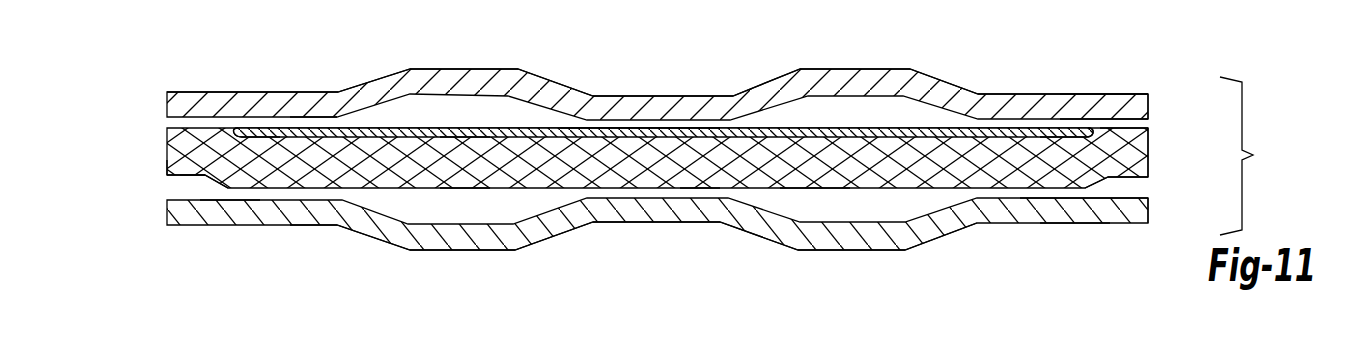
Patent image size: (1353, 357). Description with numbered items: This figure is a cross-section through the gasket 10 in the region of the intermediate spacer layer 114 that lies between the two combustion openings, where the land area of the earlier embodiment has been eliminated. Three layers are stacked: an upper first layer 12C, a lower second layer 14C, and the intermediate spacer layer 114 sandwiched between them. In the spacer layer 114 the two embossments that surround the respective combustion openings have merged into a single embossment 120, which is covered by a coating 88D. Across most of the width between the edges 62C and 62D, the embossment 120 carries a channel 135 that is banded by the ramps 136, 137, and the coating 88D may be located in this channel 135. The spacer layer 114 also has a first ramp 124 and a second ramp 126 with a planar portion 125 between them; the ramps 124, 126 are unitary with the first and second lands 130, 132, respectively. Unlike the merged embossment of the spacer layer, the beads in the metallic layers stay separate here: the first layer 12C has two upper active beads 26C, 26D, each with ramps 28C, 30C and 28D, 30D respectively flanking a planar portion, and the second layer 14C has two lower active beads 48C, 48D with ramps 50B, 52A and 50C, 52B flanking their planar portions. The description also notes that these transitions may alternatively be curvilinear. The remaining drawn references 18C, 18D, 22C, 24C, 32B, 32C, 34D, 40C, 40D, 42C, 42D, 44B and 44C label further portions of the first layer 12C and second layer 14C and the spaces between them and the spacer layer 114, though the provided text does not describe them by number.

The gasket 10 is at (1249, 156).
The first layer 12C is at (190, 97).
The second layer 14C is at (328, 218).
The upper sheet (C) 18C is at (167, 107).
The upper sheet (D) 18D is at (1148, 107).
The lower surface of upper sheet 22C is at (315, 115).
The upper surface of upper sheet 24C is at (277, 100).
The upper active bead 26C is at (458, 68).
The upper active bead 26D is at (850, 68).
The ramp 28C is at (368, 82).
The ramp 28D is at (758, 82).
The ramp 30C is at (560, 83).
The ramp 30D is at (950, 82).
The flat portion of lower sheet 32B is at (657, 223).
The flat portion of upper sheet 32C is at (663, 95).
The end portion of upper sheet (D) 34D is at (1023, 100).
The lower sheet (C) 40C is at (167, 213).
The lower sheet (D) 40D is at (1148, 208).
The gap between core and lower sheet (C) 42C is at (232, 192).
The gap between core and lower sheet (D) 42D is at (1062, 193).
The end portion of upper sheet 44B is at (1115, 98).
The end portion of lower sheet 44C is at (1078, 225).
The lower active bead 48C is at (460, 252).
The lower active bead 48D is at (858, 248).
The ramp 50B is at (373, 233).
The ramp 50C is at (753, 233).
The ramp 52A is at (557, 233).
The ramp 52B is at (948, 235).
The edge 62C is at (167, 157).
The edge 62D is at (1148, 155).
The coating 88D is at (620, 128).
The intermediate spacer layer 114 is at (172, 178).
The single embossment 120 is at (698, 143).
The first ramp 124 is at (222, 183).
The planar portion 125 is at (813, 189).
The second ramp 126 is at (1097, 182).
The first land 130 is at (192, 176).
The second land 132 is at (1127, 180).
The channel 135 is at (463, 140).
The ramp 136 is at (238, 130).
The ramp 137 is at (1080, 132).